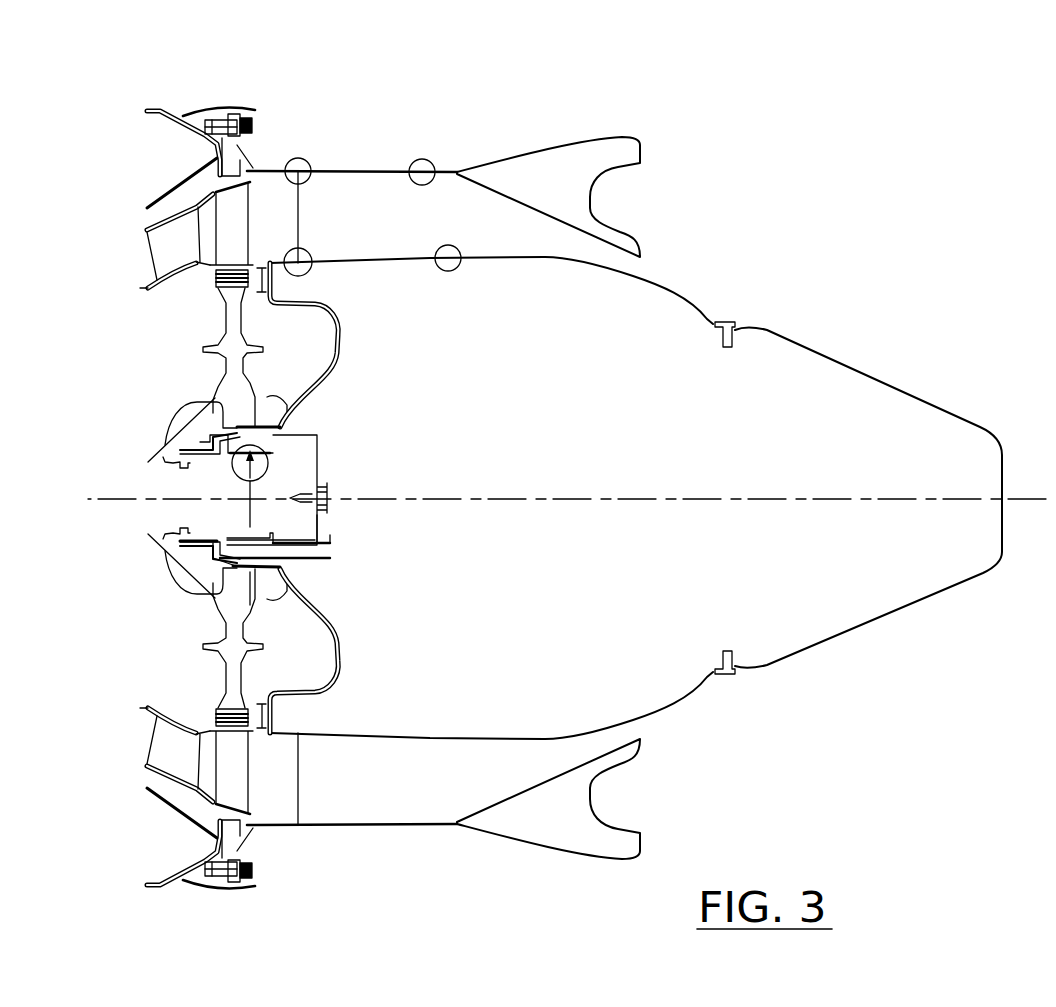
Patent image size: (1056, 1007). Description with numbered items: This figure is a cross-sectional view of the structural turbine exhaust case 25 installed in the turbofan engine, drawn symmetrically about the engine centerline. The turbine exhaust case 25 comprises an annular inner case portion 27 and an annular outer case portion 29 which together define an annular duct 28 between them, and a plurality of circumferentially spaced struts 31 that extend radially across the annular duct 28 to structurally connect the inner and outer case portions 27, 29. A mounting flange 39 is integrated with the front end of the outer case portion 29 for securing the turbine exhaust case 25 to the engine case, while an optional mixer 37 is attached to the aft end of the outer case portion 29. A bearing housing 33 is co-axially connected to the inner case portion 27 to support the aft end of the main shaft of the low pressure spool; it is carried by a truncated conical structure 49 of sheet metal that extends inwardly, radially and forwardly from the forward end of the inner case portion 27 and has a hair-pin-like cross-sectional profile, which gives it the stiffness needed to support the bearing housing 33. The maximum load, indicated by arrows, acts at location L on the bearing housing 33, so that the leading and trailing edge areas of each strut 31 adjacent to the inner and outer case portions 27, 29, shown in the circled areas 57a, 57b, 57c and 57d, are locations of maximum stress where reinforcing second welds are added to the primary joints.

The turbine exhaust case 25 is at (700, 210).
The annular inner case portion 27 is at (591, 265).
The annular duct 28 is at (292, 232).
The annular outer case portion 29 is at (378, 168).
The strut 31 is at (402, 243).
The bearing housing 33 is at (308, 410).
The mixer 37 is at (640, 153).
The mounting flange 39 is at (258, 134).
The truncated conical structure 49 is at (322, 385).
The location of maximum stress 57a is at (301, 158).
The location of maximum stress 57b is at (423, 158).
The location of maximum stress 57c is at (308, 274).
The location of maximum stress 57d is at (447, 272).
The maximum load location L is at (258, 478).